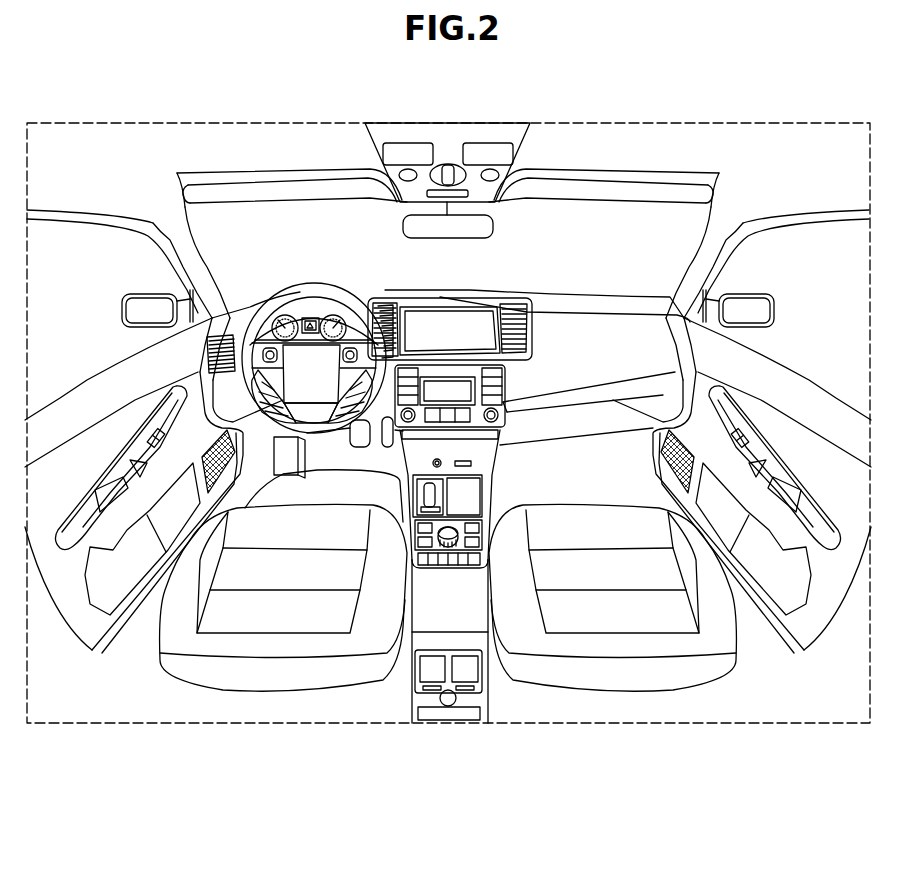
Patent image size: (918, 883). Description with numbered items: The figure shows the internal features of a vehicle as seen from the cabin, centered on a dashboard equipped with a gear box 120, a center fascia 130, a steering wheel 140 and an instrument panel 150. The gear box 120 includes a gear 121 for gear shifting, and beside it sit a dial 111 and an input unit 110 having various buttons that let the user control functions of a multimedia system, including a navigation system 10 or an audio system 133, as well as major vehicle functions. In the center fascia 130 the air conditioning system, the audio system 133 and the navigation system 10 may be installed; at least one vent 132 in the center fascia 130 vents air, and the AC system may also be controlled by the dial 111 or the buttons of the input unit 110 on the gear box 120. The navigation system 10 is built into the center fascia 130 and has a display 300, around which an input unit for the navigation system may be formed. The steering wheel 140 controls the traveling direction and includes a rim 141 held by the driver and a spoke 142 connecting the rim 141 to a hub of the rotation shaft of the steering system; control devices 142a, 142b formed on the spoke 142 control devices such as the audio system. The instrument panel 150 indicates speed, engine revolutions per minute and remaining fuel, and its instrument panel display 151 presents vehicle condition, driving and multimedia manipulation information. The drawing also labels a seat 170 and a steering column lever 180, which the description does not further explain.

The navigation system 10 is at (448, 453).
The input unit 110 is at (464, 534).
The dial 111 is at (441, 535).
The gear box 120 is at (451, 576).
The gear 121 is at (411, 488).
The center fascia 130 is at (376, 367).
The vent 132 is at (527, 323).
The audio system 133 is at (514, 377).
The steering wheel 140 is at (314, 322).
The rim 141 is at (282, 297).
The spoke 142 is at (246, 310).
The control device 142a is at (272, 335).
The control device 142b is at (370, 338).
The instrument panel 150 is at (314, 295).
The instrument panel display 151 is at (313, 317).
The seat 170 is at (283, 673).
The steering column lever 180 is at (358, 443).
The display 300 is at (476, 305).